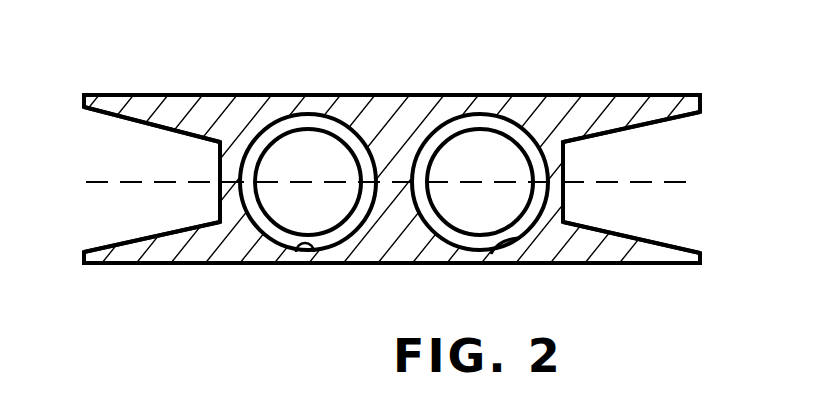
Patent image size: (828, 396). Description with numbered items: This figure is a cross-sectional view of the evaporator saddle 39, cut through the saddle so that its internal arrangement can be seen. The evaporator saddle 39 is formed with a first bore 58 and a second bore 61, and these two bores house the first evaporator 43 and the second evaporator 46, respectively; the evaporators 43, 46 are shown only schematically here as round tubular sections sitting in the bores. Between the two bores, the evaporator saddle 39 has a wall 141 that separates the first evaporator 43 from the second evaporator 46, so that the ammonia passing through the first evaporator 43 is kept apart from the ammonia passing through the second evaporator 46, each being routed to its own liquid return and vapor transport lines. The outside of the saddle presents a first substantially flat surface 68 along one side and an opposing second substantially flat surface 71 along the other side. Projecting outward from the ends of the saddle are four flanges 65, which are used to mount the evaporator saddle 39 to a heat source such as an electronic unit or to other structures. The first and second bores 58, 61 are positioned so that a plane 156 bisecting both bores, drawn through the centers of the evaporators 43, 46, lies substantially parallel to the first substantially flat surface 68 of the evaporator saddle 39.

The evaporator saddle 39 is at (557, 117).
The first evaporator 43 is at (300, 125).
The second evaporator 46 is at (473, 122).
The first bore 58 is at (302, 251).
The second bore 61 is at (497, 246).
The flanges 65 is at (150, 124).
The first substantially flat surface 68 is at (242, 95).
The second substantially flat surface 71 is at (188, 263).
The wall 141 is at (390, 226).
The plane 156 is at (650, 181).